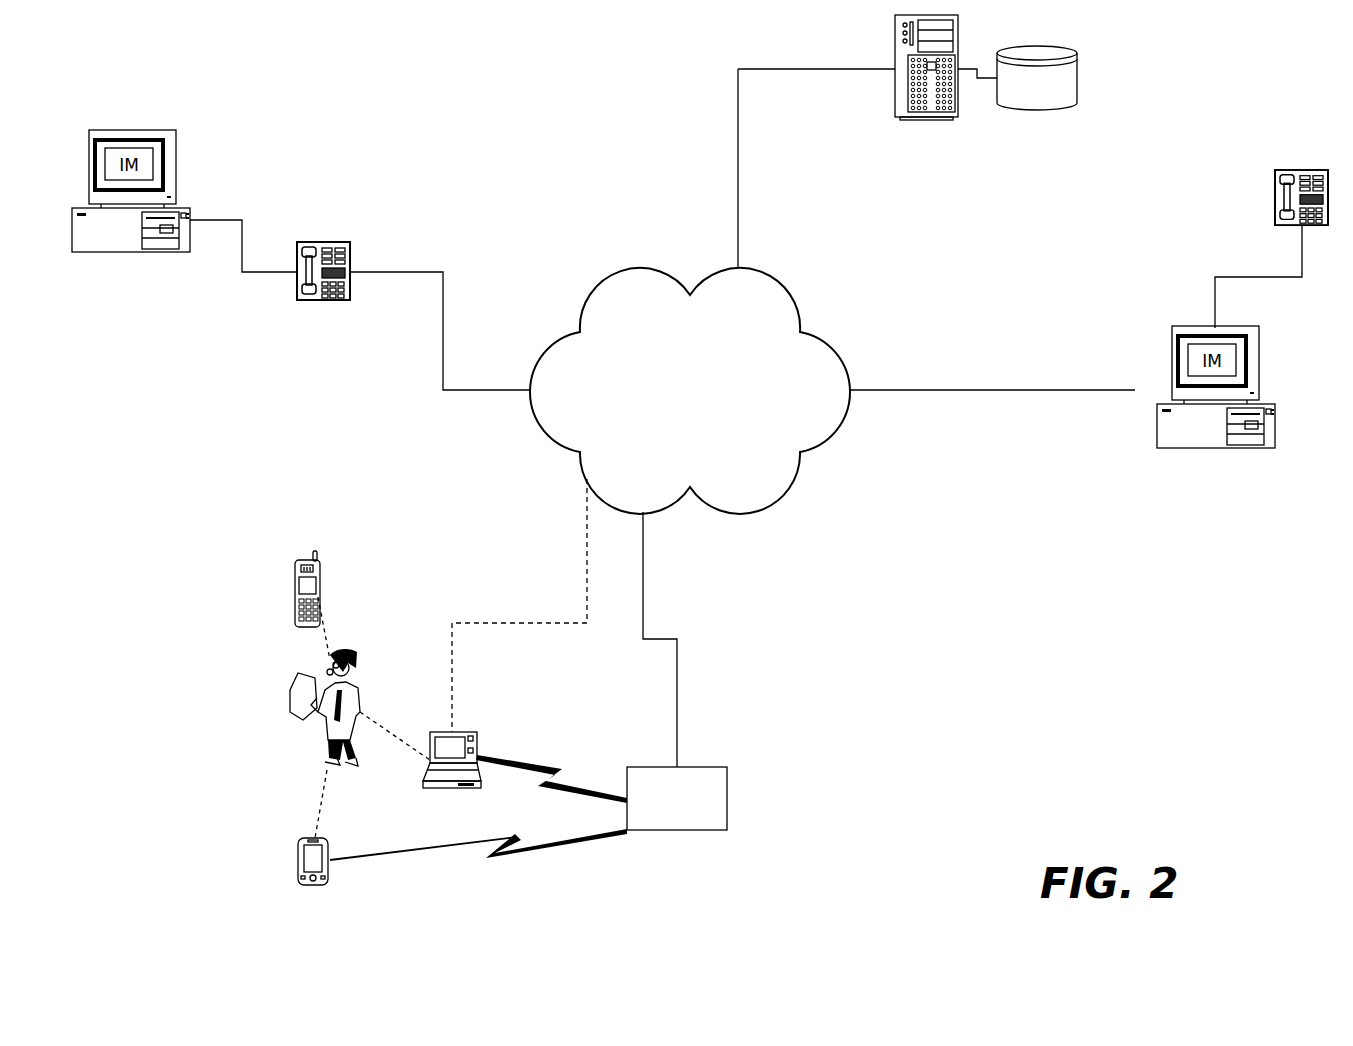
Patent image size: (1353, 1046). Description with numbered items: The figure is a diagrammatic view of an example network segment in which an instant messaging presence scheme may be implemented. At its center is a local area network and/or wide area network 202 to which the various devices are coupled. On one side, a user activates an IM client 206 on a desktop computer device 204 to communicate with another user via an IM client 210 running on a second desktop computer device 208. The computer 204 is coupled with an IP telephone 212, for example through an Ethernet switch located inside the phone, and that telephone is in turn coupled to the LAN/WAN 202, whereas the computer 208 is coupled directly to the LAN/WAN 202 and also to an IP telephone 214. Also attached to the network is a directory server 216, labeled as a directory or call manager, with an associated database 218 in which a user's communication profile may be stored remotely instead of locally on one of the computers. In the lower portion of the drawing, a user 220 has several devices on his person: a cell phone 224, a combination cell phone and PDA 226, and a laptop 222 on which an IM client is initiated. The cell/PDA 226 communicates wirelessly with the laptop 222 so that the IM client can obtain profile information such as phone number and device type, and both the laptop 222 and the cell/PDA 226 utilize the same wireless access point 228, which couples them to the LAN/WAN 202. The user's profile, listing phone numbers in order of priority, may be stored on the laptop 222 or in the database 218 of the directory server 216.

The local area network and/or wide area network (LAN/WAN) 202 is at (690, 391).
The desktop computer device 204 is at (123, 253).
The IM client 206 is at (103, 150).
The desktop computer device 208 is at (1215, 448).
The IM client 210 is at (1237, 362).
The IP telephone 212 is at (303, 302).
The IP telephone 214 is at (1272, 190).
The directory server 216 is at (895, 48).
The database 218 is at (1037, 78).
The user 220 is at (312, 727).
The laptop 222 is at (478, 737).
The cell phone 224 is at (320, 565).
The combination cell phone and PDA 226 is at (298, 848).
The wireless access point 228 is at (725, 830).